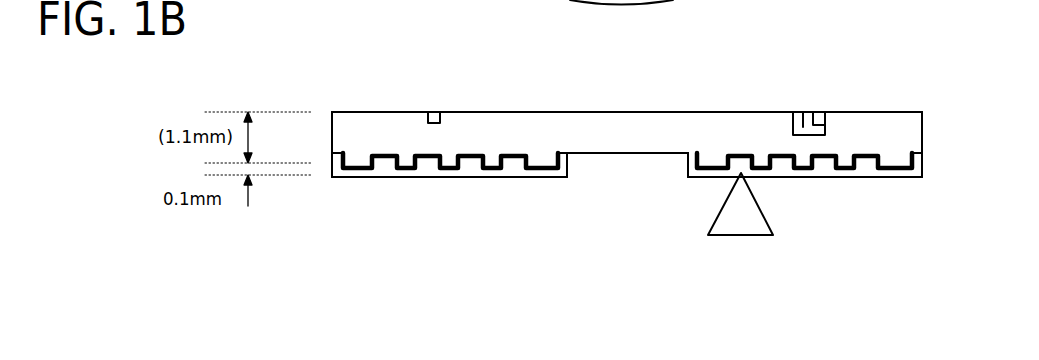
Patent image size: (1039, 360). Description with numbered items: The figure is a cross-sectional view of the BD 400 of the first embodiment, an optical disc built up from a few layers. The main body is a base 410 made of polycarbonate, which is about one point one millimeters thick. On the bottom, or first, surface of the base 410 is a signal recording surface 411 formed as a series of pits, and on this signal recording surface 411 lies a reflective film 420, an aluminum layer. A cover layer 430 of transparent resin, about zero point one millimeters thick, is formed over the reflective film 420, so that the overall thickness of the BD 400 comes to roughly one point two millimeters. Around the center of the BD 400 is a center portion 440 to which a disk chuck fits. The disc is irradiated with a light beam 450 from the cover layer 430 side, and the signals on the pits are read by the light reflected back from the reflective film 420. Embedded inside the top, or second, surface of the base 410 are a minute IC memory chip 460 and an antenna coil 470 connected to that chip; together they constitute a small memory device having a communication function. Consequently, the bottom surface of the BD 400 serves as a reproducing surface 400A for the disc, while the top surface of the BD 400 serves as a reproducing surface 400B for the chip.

The BD 400 is at (638, 112).
The reproducing surface for the disc 400A is at (690, 178).
The reproducing surface for the chip 400B is at (503, 112).
The base 410 is at (912, 127).
The signal recording surface 411 is at (540, 170).
The reflective film 420 is at (893, 165).
The cover layer 430 is at (915, 180).
The center portion 440 is at (592, 157).
The light beam 450 is at (763, 213).
The minute IC memory chip 460 is at (802, 113).
The antenna coil 470 is at (433, 112).